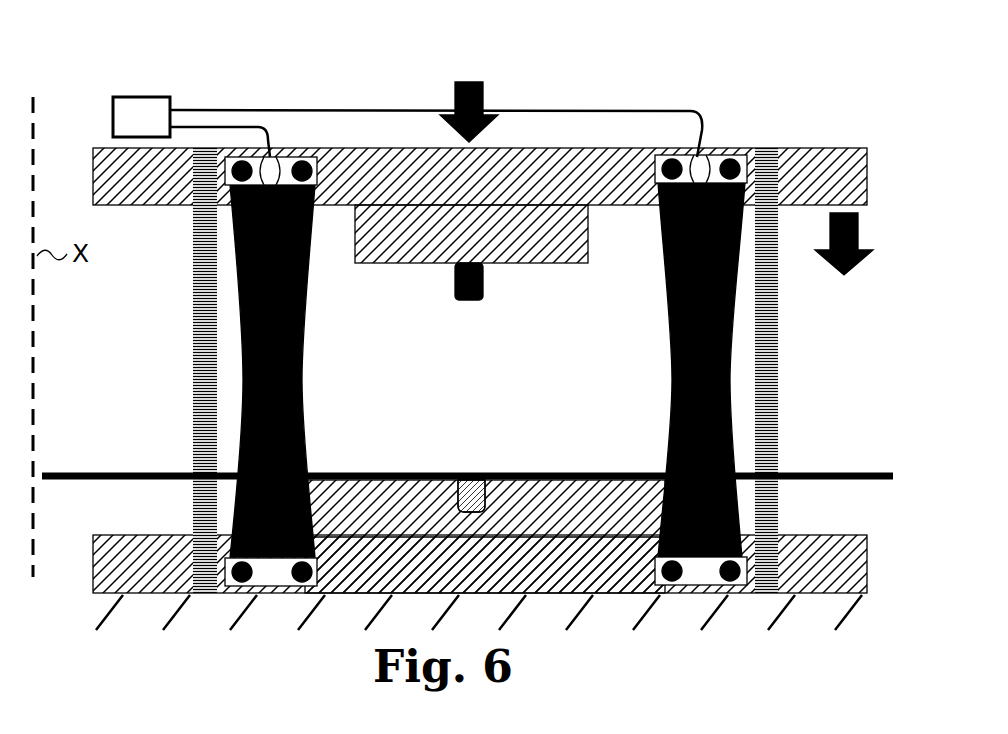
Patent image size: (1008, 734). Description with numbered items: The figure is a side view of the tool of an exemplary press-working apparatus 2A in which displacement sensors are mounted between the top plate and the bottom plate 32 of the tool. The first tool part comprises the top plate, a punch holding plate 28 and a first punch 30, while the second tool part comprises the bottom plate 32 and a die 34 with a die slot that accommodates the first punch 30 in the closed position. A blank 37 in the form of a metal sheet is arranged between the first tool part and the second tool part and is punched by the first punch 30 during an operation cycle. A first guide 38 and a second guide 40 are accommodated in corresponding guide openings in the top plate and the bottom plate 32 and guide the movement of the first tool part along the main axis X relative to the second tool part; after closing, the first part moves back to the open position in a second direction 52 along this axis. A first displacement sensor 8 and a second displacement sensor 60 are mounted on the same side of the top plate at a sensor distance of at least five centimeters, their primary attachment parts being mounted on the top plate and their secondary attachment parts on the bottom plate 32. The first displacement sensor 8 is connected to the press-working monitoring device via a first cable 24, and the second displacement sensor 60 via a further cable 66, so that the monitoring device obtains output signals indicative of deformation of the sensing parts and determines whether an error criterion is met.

The press-working apparatus 2A is at (302, 87).
The first displacement sensor 8 is at (675, 355).
The first cable 24 is at (682, 110).
The punch holding plate 28 is at (540, 233).
The first punch 30 is at (483, 273).
The bottom plate 32 is at (115, 570).
The die 34 is at (390, 472).
The blank 37 is at (112, 465).
The first guide 38 is at (200, 292).
The second guide 40 is at (767, 370).
The second direction 52 is at (844, 275).
The second displacement sensor 60 is at (302, 305).
The cable 66 is at (193, 123).